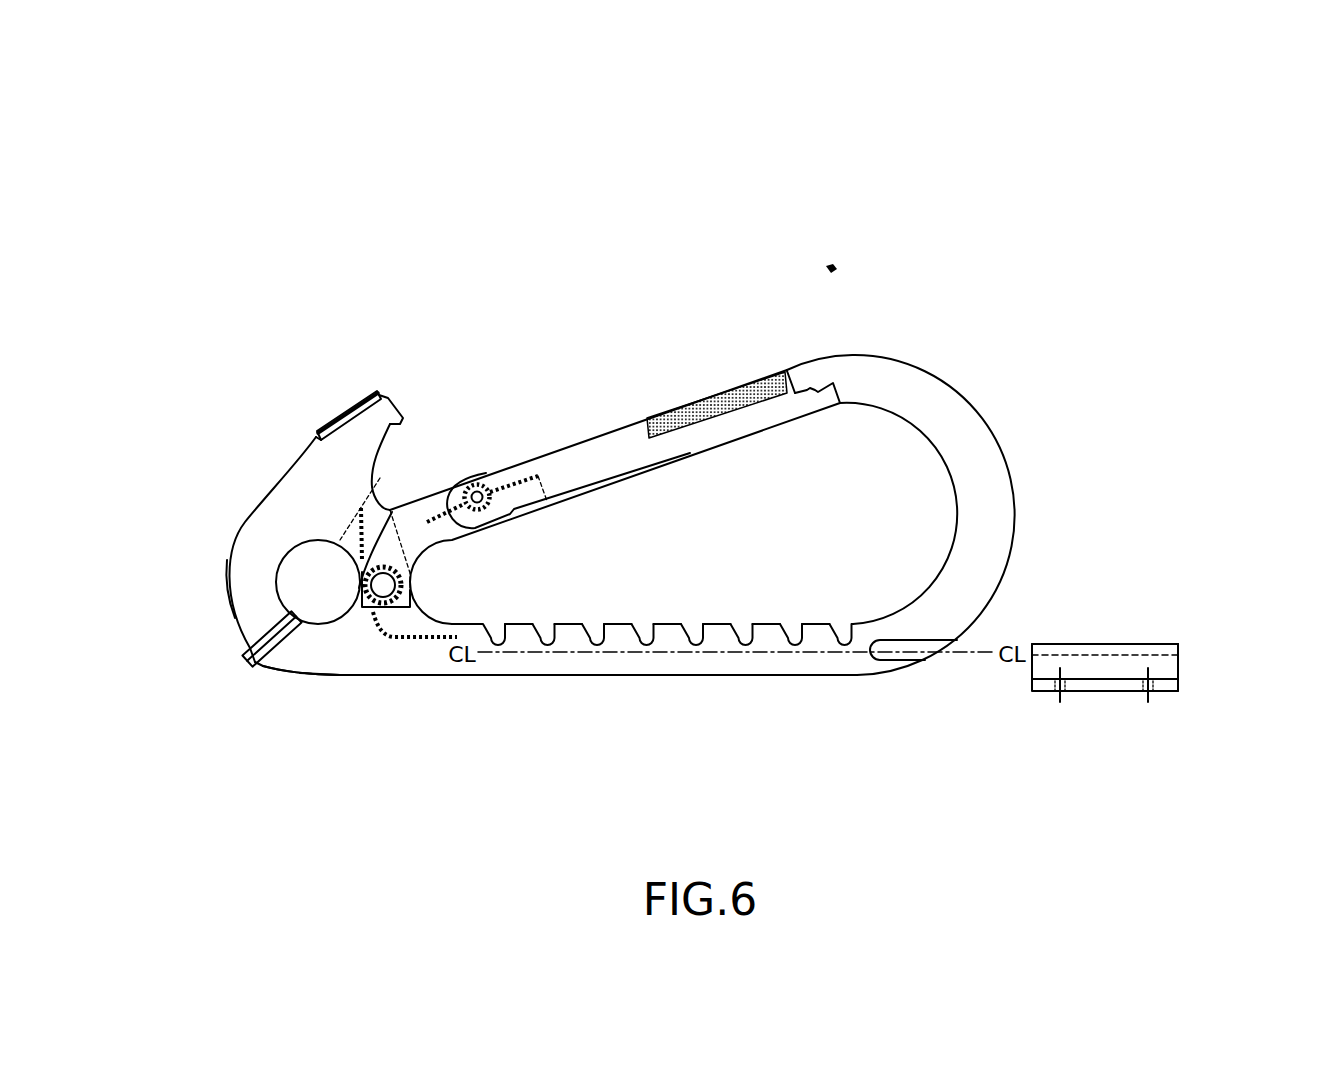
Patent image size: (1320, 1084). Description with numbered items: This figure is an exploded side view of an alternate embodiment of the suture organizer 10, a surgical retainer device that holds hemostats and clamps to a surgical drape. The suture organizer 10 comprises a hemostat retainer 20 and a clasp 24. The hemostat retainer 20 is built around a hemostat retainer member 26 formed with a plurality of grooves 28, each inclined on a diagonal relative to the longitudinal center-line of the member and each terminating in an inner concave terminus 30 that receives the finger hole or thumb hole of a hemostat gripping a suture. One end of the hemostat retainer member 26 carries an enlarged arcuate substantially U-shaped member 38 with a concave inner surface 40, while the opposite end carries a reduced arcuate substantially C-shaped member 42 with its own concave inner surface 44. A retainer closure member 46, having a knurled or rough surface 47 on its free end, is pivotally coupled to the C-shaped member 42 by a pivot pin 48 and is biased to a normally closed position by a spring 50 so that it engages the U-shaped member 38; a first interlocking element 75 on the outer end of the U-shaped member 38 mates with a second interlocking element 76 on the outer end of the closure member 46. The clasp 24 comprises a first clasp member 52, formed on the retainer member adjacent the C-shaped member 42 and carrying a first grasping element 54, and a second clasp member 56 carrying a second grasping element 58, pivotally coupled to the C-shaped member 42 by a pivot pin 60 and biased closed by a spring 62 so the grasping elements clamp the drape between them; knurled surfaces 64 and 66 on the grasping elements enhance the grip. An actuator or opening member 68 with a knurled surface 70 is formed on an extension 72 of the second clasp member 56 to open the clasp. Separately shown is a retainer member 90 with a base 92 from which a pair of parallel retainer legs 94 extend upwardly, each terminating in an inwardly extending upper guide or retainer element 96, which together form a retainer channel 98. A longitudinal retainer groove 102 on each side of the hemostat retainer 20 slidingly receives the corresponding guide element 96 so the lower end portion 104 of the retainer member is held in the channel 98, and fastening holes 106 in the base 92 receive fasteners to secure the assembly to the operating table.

The suture organizer 10 is at (572, 283).
The hemostat retainer 20 is at (930, 313).
The clasp 24 is at (228, 703).
The hemostat retainer member 26 is at (718, 676).
The grooves 28 is at (497, 620).
The inner concave terminus 30 is at (498, 645).
The enlarged arcuate substantially U-shaped member 38 is at (975, 405).
The concave inner surface 40 is at (963, 483).
The reduced arcuate substantially C-shaped member 42 is at (392, 512).
The concave inner surface 44 is at (413, 597).
The retainer closure member 46 is at (561, 450).
The knurled or rough surface 47 is at (716, 395).
The pivot pin 48 is at (476, 497).
The bias or spring 50 is at (500, 487).
The first clasp member 52 is at (315, 690).
The first grasping element 54 is at (275, 674).
The second clasp member 56 is at (217, 578).
The second grasping element 58 is at (251, 642).
The pivot pin 60 is at (383, 585).
The bias or spring 62 is at (357, 516).
The knurled or rough surface 64 is at (277, 617).
The knurled or rough surface 66 is at (264, 638).
The actuator or opening member 68 is at (388, 387).
The knurled or rough surface 70 is at (330, 428).
The extension 72 is at (403, 418).
The first interlocking element 75 is at (819, 406).
The second interlocking element 76 is at (810, 361).
The retainer member 90 is at (1114, 625).
The base 92 is at (1103, 687).
The retainer legs 94 is at (1080, 663).
The upper guide or retainer element 96 is at (1155, 650).
The retainer channel 98 is at (1167, 667).
The longitudinal retainer groove 102 is at (936, 637).
The lower end portion 104 is at (841, 663).
The securing or fastening holes 106 is at (1060, 690).